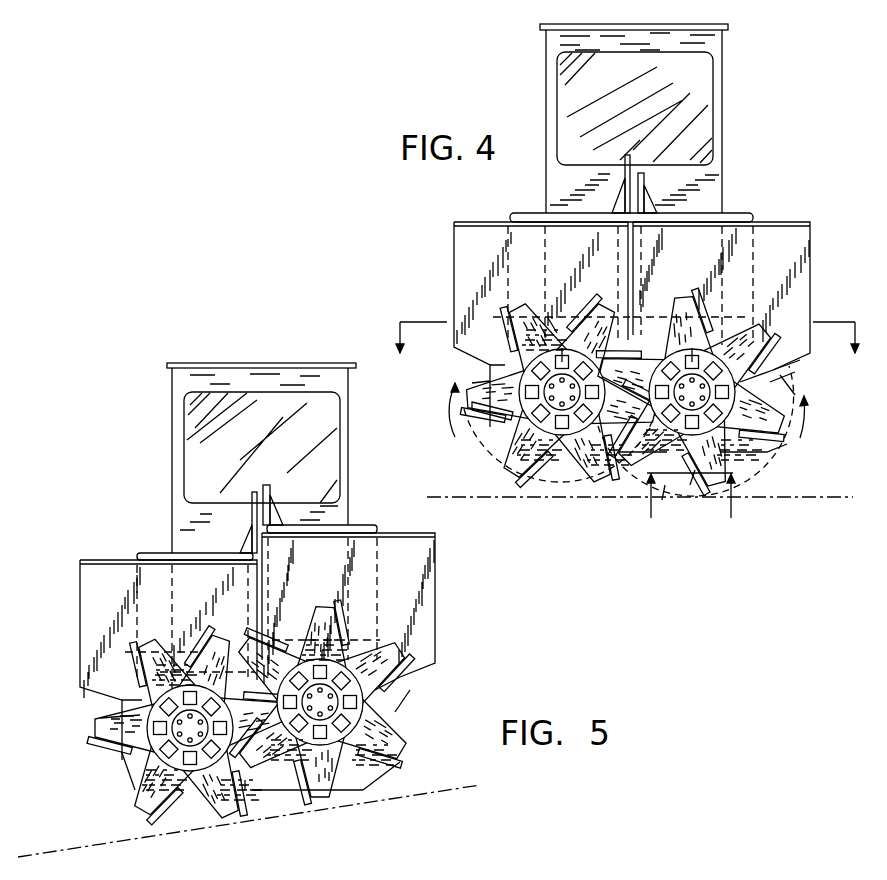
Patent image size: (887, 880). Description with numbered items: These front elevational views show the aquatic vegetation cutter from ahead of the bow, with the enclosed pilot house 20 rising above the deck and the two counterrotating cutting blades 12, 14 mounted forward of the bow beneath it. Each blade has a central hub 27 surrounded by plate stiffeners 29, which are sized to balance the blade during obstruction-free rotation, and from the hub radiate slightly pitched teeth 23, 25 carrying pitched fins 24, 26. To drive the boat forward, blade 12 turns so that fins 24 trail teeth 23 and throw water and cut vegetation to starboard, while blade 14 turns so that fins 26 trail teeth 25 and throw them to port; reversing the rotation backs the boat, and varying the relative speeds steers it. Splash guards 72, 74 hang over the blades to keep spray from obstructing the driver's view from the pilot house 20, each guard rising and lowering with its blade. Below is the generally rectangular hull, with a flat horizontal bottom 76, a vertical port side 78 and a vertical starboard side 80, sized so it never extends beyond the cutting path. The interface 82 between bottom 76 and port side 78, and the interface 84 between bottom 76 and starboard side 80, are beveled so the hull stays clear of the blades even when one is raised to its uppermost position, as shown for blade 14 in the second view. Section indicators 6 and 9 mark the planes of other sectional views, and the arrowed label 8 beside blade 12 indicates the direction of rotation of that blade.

In FIG. 4, the pilot house 20 is at (722, 52).
In FIG. 5, the pilot house 20 is at (178, 385).
In FIG. 4, the splash guard 72 is at (452, 248).
In FIG. 5, the splash guard 72 is at (80, 590).
In FIG. 4, the splash guard 74 is at (800, 253).
In FIG. 5, the splash guard 74 is at (430, 572).
In FIG. 4, the left rotor 8 is at (483, 440).
In FIG. 4, the cutting blade 12 is at (586, 480).
In FIG. 5, the cutting blade 12 is at (228, 815).
In FIG. 4, the cutting blade 14 is at (775, 448).
In FIG. 5, the cutting blade 14 is at (400, 745).
In FIG. 4, the teeth 23 is at (472, 392).
In FIG. 4, the fins 24 is at (483, 408).
In FIG. 4, the teeth 25 is at (690, 485).
In FIG. 4, the fins 26 is at (662, 500).
In FIG. 4, the hub 27 is at (557, 333).
In FIG. 4, the plate stiffeners 29 is at (560, 360).
In FIG. 4, the bottom 76 is at (640, 455).
In FIG. 5, the bottom 76 is at (273, 790).
In FIG. 4, the port side 78 is at (770, 382).
In FIG. 5, the port side 78 is at (395, 710).
In FIG. 4, the starboard side 80 is at (472, 368).
In FIG. 5, the starboard side 80 is at (120, 707).
In FIG. 5, the interface 82 is at (380, 775).
In FIG. 5, the interface 84 is at (127, 772).
In FIG. 4, the section line 6- 6 is at (626, 350).
In FIG. 4, the section line 9- 9 is at (691, 512).